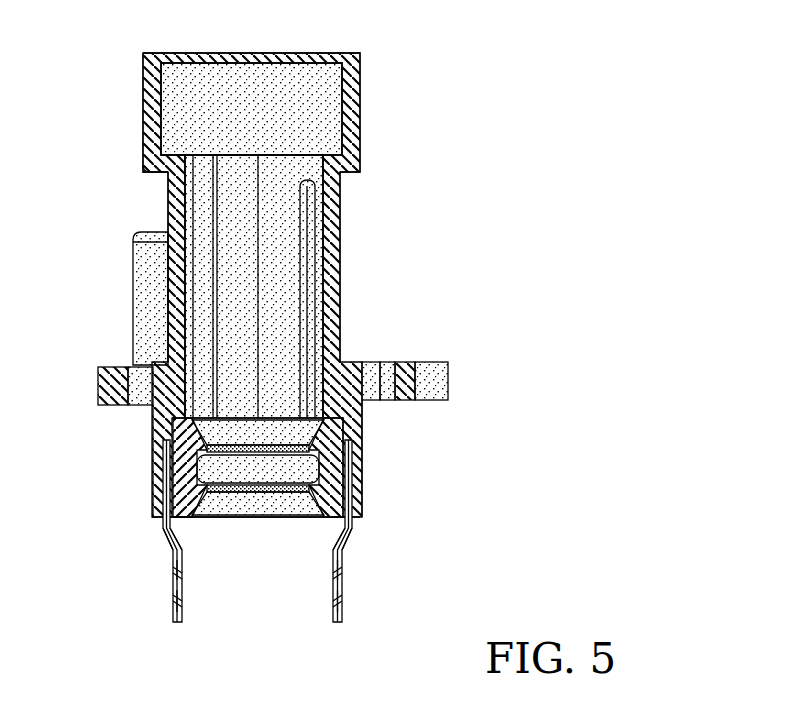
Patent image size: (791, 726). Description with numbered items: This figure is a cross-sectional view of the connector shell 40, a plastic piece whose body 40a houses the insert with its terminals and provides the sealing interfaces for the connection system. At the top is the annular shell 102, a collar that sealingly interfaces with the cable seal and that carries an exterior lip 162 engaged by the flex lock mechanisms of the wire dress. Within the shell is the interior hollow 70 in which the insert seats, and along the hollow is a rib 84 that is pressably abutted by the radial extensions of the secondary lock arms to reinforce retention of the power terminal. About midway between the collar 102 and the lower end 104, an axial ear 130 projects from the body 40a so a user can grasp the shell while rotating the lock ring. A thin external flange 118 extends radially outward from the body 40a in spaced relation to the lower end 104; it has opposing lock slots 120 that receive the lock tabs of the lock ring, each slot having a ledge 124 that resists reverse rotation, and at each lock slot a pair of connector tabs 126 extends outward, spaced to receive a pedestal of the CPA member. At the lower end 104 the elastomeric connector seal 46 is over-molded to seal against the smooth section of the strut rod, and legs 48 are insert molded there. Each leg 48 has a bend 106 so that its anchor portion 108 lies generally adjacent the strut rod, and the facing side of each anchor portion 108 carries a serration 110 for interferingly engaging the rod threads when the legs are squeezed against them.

The connector shell 40 is at (273, 285).
The body 40a is at (341, 212).
The annular shell 102 is at (363, 93).
The exterior lip 162 is at (160, 174).
The interior hollow 70 is at (284, 237).
The rib 84 is at (308, 295).
The axial ear 130 is at (133, 258).
The external flange 118 is at (120, 367).
The lock slot 120 is at (138, 397).
The ledge 124 is at (388, 402).
The connector tab 126 is at (443, 382).
The connector seal 46 is at (326, 443).
The leg 48 is at (175, 578).
The bend 106 is at (172, 550).
The anchor portion 108 is at (172, 590).
The serration 110 is at (183, 600).
The lower end 104 is at (230, 608).